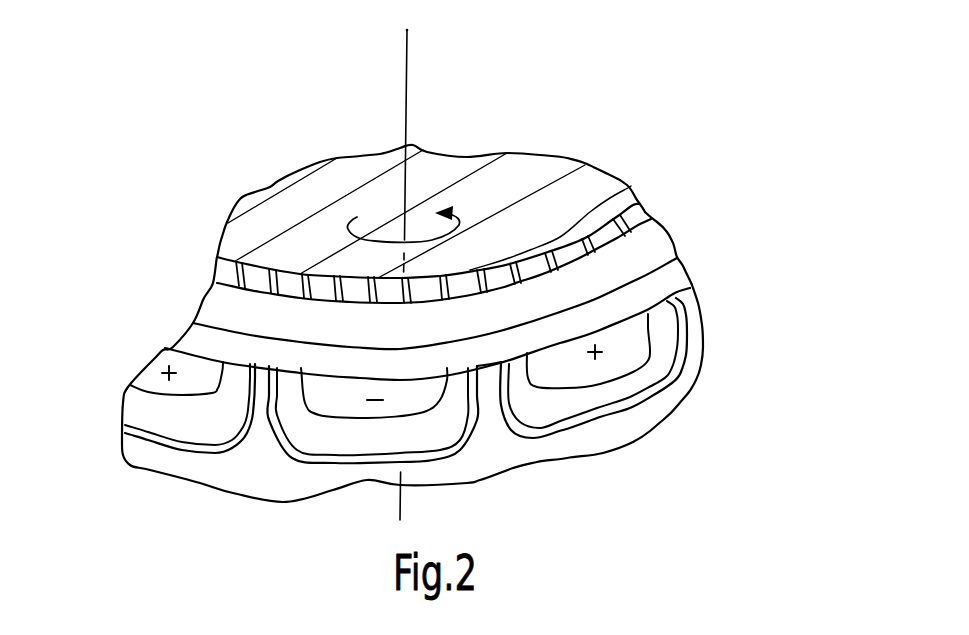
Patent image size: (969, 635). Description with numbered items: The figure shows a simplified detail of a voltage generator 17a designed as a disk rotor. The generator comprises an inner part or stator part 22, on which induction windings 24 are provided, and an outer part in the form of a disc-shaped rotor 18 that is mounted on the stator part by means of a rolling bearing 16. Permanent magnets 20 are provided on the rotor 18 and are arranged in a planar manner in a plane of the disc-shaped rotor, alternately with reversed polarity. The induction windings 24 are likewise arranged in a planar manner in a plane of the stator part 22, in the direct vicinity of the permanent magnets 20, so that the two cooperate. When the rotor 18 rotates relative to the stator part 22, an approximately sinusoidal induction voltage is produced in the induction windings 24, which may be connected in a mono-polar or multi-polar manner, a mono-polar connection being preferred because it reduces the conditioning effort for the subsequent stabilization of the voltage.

The voltage generator 17a is at (155, 217).
The rolling bearing 16 is at (644, 212).
The rotor 18 is at (636, 250).
The permanent magnets 20 is at (632, 333).
The stator part 22 is at (680, 390).
The induction windings 24 is at (590, 420).